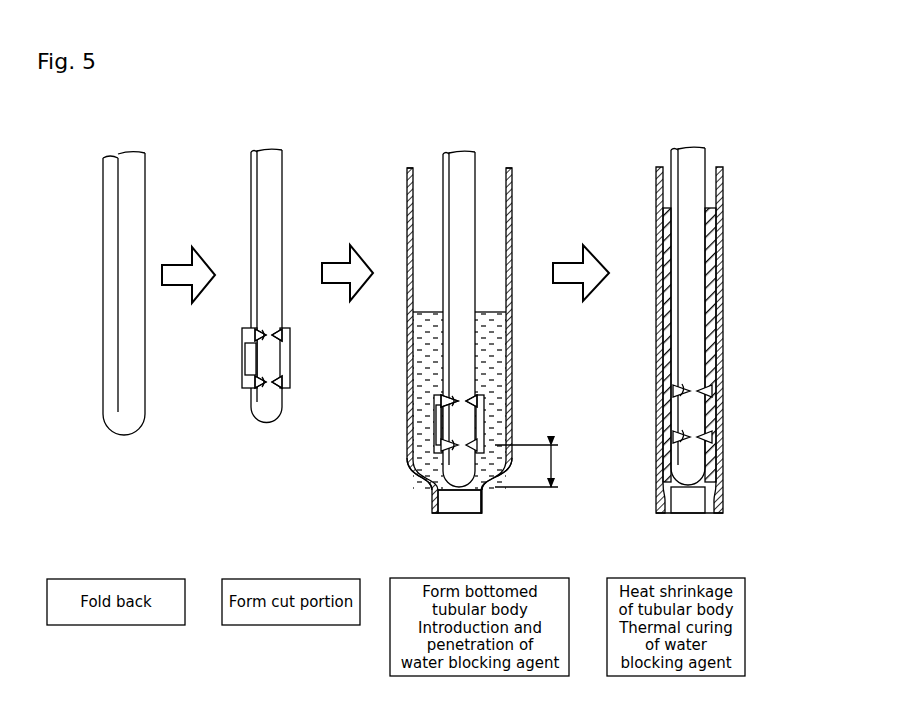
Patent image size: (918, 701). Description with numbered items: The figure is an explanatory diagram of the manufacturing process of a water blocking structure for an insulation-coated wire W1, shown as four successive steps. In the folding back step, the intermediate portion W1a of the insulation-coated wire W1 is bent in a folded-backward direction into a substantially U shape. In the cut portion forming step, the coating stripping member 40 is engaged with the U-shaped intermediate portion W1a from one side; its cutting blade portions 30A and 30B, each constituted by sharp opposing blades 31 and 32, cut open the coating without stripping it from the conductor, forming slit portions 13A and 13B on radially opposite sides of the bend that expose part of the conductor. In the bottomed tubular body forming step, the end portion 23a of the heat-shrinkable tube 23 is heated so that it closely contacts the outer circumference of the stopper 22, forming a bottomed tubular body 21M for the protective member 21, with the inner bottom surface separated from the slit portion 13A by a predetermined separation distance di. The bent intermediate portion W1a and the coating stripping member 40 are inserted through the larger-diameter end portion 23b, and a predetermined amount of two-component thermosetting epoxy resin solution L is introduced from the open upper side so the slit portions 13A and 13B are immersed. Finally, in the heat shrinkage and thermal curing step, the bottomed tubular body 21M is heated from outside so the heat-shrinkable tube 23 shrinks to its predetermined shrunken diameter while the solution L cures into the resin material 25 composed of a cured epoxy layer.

The insulation-coated wire W1 is at (104, 232).
The intermediate portion W1a is at (128, 436).
The coating stripping member 40 is at (240, 355).
The opposing blade 31 is at (243, 333).
The opposing blade 32 is at (286, 340).
The cutting blade portion 30A is at (243, 394).
The cutting blade portion 30B is at (296, 334).
The slit portion 13A is at (268, 386).
The slit portion 13B is at (262, 334).
The heat-shrinkable tube 23 is at (512, 342).
The larger-diameter end portion 23b is at (512, 190).
The end portion 23a is at (494, 487).
The thermosetting epoxy resin solution L is at (494, 312).
The separation distance di is at (533, 466).
The bottomed tubular body 21M is at (425, 497).
The stopper 22 is at (457, 512).
The protective member 21 is at (728, 276).
The resin material 25 is at (723, 345).